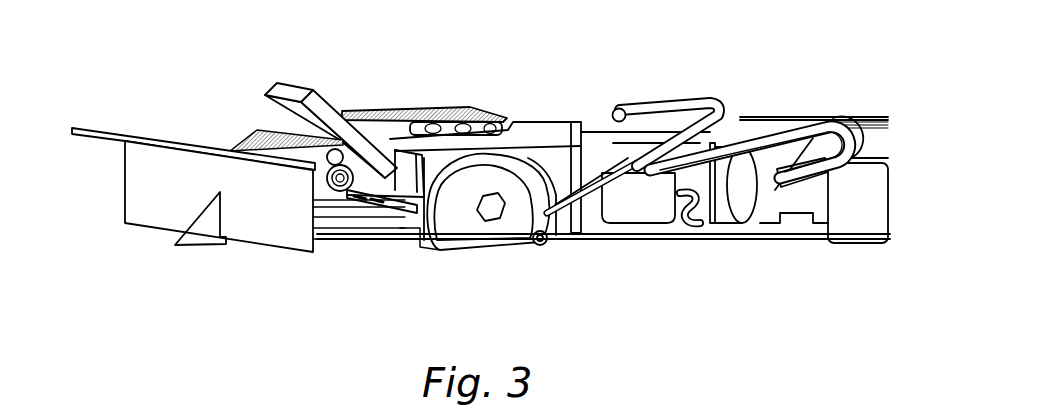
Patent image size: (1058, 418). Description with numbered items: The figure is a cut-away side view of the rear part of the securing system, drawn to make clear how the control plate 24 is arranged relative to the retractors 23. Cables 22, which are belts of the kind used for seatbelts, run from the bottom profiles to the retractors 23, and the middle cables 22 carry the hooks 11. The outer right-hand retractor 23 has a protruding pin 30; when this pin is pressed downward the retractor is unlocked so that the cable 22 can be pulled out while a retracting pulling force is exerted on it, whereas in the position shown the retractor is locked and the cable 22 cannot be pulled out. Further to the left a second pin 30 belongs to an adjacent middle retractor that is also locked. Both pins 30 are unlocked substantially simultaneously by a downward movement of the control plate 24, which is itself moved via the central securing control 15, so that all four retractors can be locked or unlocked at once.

The hooks 11 is at (716, 102).
The central securing control 15 is at (293, 92).
The cables 22 is at (662, 240).
The retractors 23 is at (478, 227).
The control plate 24 is at (367, 181).
The protruding pin 30 is at (355, 201).